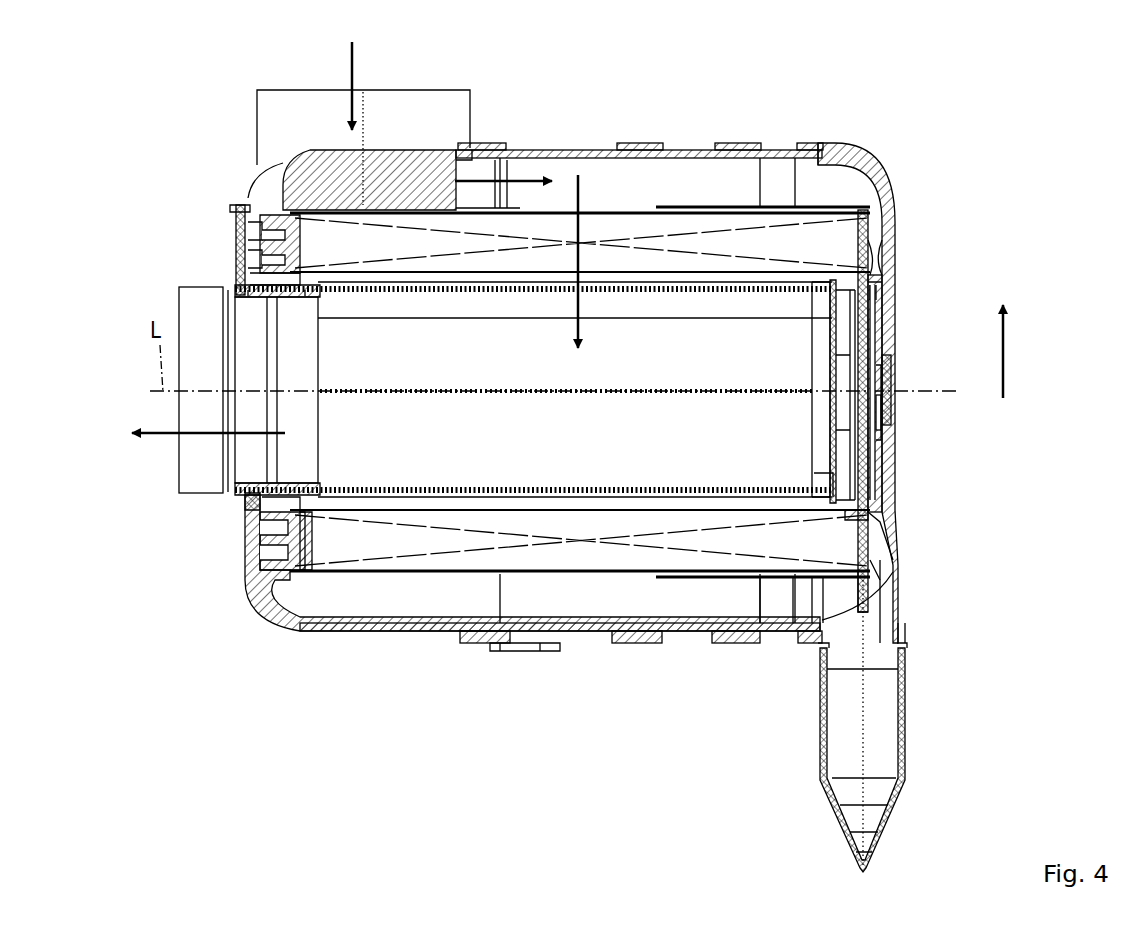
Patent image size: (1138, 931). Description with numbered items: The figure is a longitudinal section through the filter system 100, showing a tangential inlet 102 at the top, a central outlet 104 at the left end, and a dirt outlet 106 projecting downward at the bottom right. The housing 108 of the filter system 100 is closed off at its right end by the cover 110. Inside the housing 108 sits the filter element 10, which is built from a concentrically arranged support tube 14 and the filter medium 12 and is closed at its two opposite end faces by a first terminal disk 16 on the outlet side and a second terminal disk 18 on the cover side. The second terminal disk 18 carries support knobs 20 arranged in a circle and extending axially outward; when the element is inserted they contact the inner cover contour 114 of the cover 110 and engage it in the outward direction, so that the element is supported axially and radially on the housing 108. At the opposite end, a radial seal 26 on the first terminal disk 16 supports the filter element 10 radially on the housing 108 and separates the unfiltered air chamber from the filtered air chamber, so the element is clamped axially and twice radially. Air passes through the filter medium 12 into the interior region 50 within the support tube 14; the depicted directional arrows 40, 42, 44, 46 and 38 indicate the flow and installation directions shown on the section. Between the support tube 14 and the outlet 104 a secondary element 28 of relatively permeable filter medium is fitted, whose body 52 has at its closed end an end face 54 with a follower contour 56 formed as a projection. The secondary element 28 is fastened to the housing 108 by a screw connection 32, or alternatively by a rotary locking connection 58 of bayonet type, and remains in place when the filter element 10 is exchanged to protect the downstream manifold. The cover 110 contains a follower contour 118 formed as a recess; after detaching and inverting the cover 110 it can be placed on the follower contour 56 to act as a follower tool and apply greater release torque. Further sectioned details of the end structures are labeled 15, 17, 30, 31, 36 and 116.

The filter system 100 is at (975, 158).
The tangential inlet 102 is at (400, 108).
The central outlet 104 is at (190, 410).
The dirt outlet 106 is at (887, 717).
The housing 108 is at (305, 631).
The cover 110 is at (870, 162).
The inner cover contour 114 is at (880, 232).
The seal ring 116 is at (292, 536).
The follower contour 118 is at (892, 410).
The filter element 10 is at (556, 580).
The filter medium 12 is at (478, 562).
The support tube 14 is at (616, 496).
The bearing ring 15 is at (248, 512).
The first terminal disk 16 is at (245, 260).
The end plate 17 is at (878, 560).
The second terminal disk 18 is at (870, 465).
The support knobs 20 is at (884, 263).
The radial seal 26 is at (258, 550).
The secondary element 28 is at (660, 500).
The support ring 30 is at (880, 522).
The cover plate 31 is at (247, 228).
The screw connection 32 is at (250, 298).
The rotary locking connection 58 is at (276, 293).
The cap 36 is at (343, 200).
The direction arrow 38 is at (1010, 355).
The force direction 40 is at (350, 62).
The flow direction 42 is at (520, 178).
The flow direction 44 is at (582, 190).
The movement direction 46 is at (160, 440).
The bore 50 is at (503, 434).
The body 52 is at (724, 484).
The end face 54 is at (838, 336).
The follower contour 56 is at (840, 376).